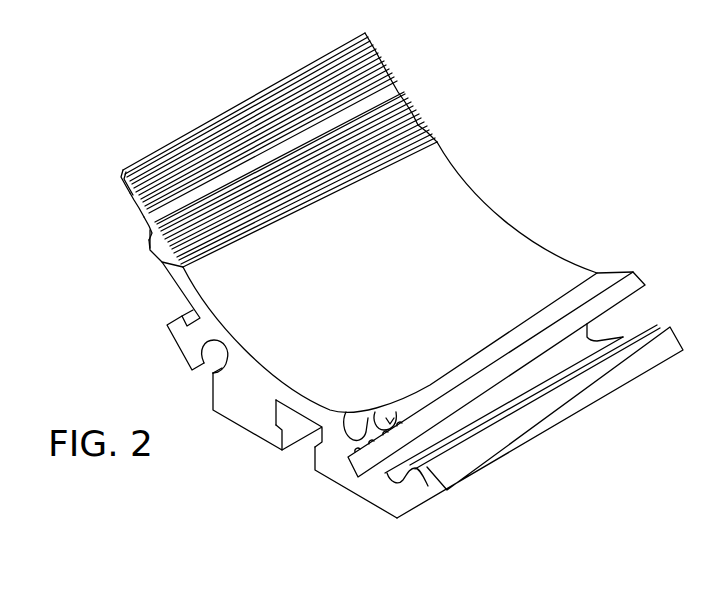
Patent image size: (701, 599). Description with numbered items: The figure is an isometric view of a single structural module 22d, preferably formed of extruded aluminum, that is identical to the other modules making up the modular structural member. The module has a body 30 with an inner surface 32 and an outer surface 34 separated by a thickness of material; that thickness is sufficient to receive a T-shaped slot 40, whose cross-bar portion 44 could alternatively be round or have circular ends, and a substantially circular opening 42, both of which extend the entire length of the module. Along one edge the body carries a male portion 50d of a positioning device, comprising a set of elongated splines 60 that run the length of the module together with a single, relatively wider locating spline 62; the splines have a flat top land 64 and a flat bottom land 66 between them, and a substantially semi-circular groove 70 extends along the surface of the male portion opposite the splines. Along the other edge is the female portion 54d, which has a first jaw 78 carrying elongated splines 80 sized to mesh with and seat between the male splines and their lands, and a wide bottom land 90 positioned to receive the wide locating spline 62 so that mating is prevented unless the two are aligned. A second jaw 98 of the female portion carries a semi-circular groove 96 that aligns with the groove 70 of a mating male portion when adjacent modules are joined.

The structural module 22d is at (512, 171).
The elongated splines 60 is at (367, 48).
The locating spline 62 is at (374, 98).
The male portion 50d is at (123, 171).
The bottom land 66 is at (134, 203).
The semi-circular groove 70 is at (141, 224).
The top land 64 is at (152, 238).
The inner surface 32 is at (392, 298).
The circular opening 42 is at (201, 371).
The body 30 is at (243, 412).
The cross-bar portion 44 is at (270, 396).
The T slot 40 is at (298, 454).
The outer surface 34 is at (327, 478).
The first jaw 78 is at (392, 422).
The elongated splines 80 is at (358, 436).
The wide bottom land 90 is at (382, 432).
The female portion 54d is at (428, 486).
The second jaw 98 is at (527, 428).
The semi-circular groove 96 is at (412, 482).